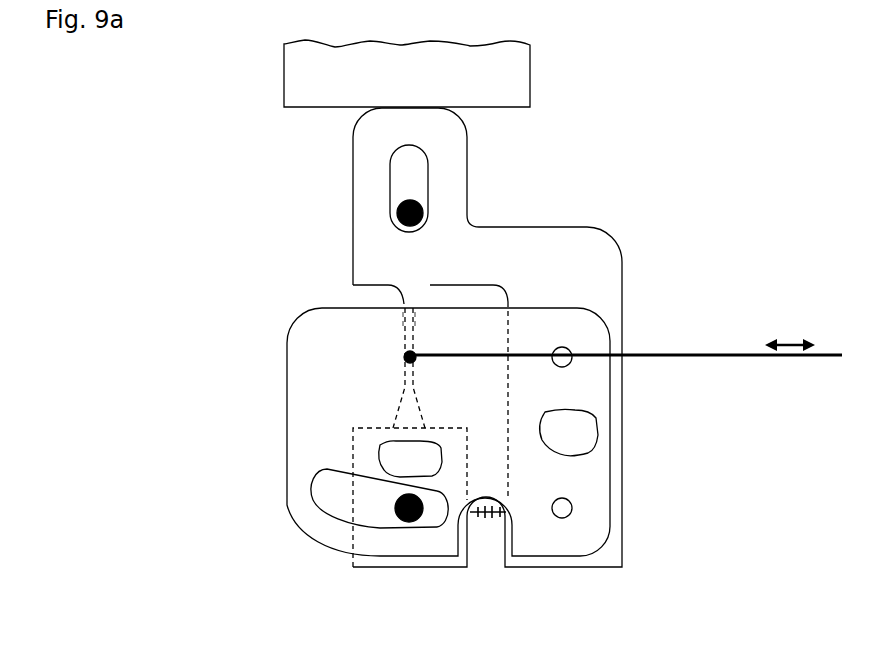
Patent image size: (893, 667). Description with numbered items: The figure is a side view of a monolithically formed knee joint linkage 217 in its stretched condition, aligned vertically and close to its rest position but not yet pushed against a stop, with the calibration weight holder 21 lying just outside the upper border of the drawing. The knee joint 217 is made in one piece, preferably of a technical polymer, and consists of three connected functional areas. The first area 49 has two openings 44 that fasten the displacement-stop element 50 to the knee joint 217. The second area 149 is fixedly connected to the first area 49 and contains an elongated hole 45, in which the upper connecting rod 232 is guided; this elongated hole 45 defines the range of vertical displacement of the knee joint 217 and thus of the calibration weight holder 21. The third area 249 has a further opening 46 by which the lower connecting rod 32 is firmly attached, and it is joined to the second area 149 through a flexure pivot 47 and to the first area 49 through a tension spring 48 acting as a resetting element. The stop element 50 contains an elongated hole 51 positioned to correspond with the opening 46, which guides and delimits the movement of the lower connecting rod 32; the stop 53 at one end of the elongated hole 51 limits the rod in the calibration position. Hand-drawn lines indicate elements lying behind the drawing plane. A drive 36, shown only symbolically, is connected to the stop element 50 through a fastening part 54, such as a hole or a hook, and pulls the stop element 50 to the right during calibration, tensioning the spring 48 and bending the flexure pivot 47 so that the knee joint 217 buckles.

The calibration weight holder 21 is at (468, 83).
The knee joint linkage 217 is at (296, 162).
The second area 149 is at (422, 266).
The elongated hole 45 is at (408, 168).
The upper connecting rod 232 is at (423, 208).
The displacement-stop element 50 is at (262, 306).
The flexure pivot 47 is at (405, 366).
The fastening part 54 is at (407, 353).
The drive 36 is at (822, 357).
The openings 44 is at (571, 352).
The first area 49 is at (580, 442).
The second stop 53 is at (340, 494).
The elongated hole 51 is at (337, 493).
The opening 46 is at (423, 510).
The third area 249 is at (428, 471).
The lower connecting rod 32 is at (402, 520).
The tension spring 48 is at (490, 517).